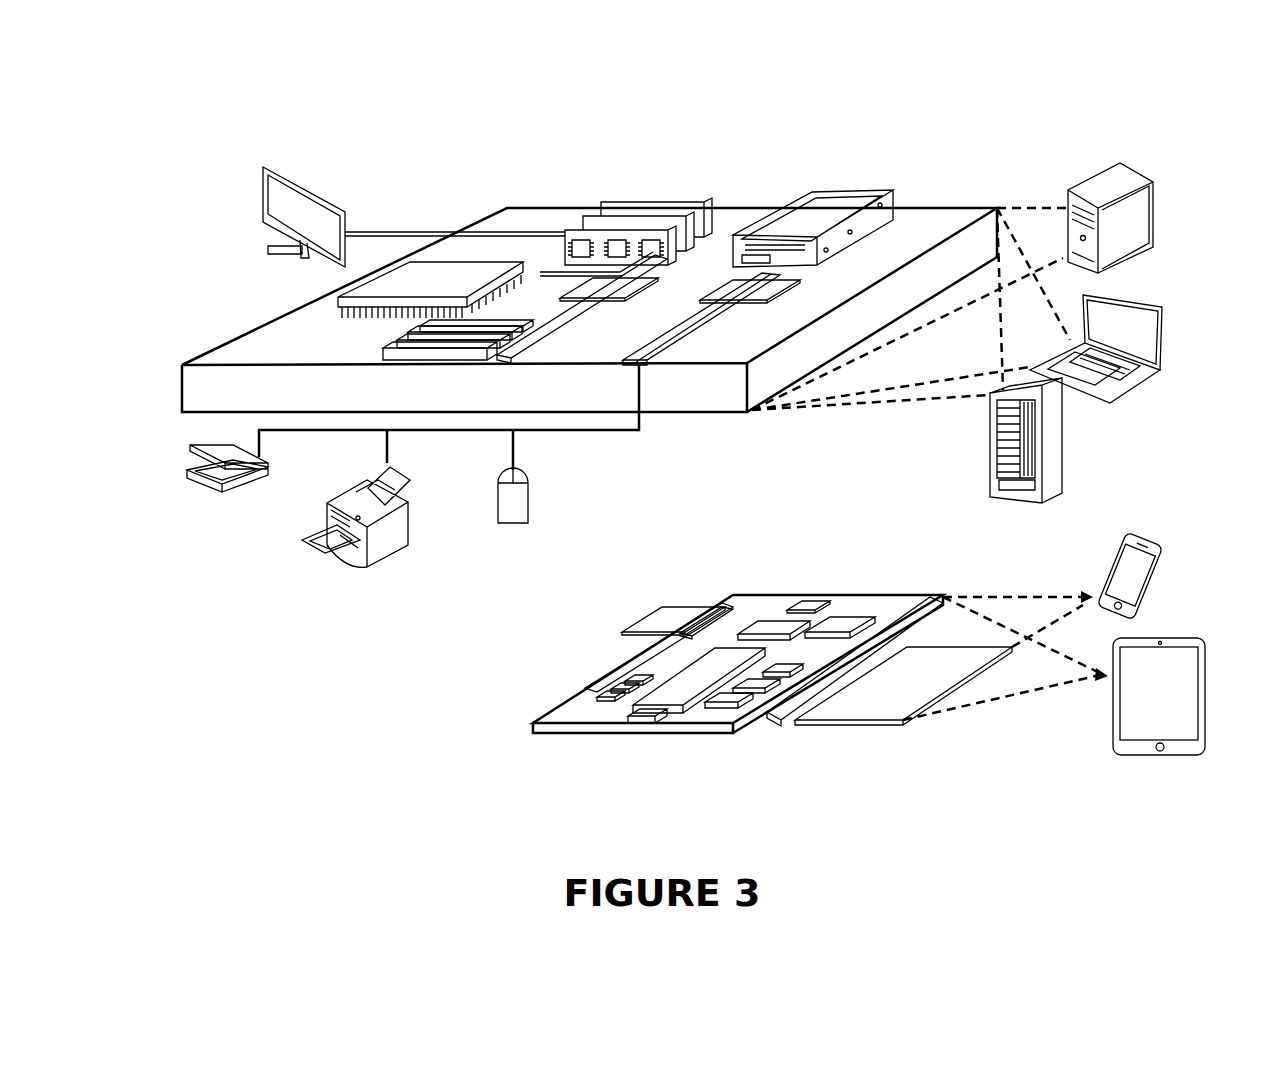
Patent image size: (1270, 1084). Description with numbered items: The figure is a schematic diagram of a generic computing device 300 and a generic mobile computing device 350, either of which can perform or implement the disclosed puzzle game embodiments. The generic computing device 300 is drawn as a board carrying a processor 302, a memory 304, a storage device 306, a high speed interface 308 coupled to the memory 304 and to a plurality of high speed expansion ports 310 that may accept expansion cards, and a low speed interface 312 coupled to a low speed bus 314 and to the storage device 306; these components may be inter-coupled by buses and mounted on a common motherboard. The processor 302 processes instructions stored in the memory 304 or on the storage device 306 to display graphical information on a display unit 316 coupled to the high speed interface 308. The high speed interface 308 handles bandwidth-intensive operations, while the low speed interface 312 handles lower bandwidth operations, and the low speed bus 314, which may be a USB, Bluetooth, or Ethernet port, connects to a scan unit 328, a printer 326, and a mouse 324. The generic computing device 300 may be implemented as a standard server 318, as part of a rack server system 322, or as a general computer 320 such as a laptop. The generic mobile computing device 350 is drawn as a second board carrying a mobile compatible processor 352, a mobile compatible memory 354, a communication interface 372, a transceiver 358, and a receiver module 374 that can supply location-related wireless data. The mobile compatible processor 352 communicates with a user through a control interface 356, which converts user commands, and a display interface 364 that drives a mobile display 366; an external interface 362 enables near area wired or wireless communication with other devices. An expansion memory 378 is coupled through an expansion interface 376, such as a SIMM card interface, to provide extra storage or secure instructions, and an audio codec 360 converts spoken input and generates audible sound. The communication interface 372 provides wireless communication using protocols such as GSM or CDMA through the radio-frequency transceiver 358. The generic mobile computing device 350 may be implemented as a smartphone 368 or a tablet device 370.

The generic computing device 300 is at (452, 203).
The processor 302 is at (338, 302).
The memory 304 is at (632, 200).
The storage device 306 is at (810, 192).
The high speed interface 308 is at (588, 290).
The high speed expansion ports 310 is at (400, 343).
The low speed interface 312 is at (763, 297).
The low speed bus 314 is at (650, 365).
The display unit 316 is at (266, 172).
The standard server 318 is at (1155, 185).
The general computer 320 is at (1165, 324).
The rack server system 322 is at (988, 465).
The mouse 324 is at (508, 527).
The printer 326 is at (358, 568).
The scan unit 328 is at (192, 470).
The generic mobile computing device 350 is at (525, 722).
The mobile compatible processor 352 is at (678, 710).
The mobile compatible memory 354 is at (605, 693).
The control interface 356 is at (767, 692).
The transceiver 358 is at (870, 622).
The audio codec 360 is at (780, 678).
The external interface 362 is at (645, 723).
The display interface 364 is at (727, 702).
The mobile display 366 is at (905, 722).
The smartphone 368 is at (1122, 538).
The tablet device 370 is at (1157, 758).
The communication interface 372 is at (775, 628).
The receiver module 374 is at (808, 605).
The expansion interface 376 is at (727, 607).
The expansion memory 378 is at (640, 623).